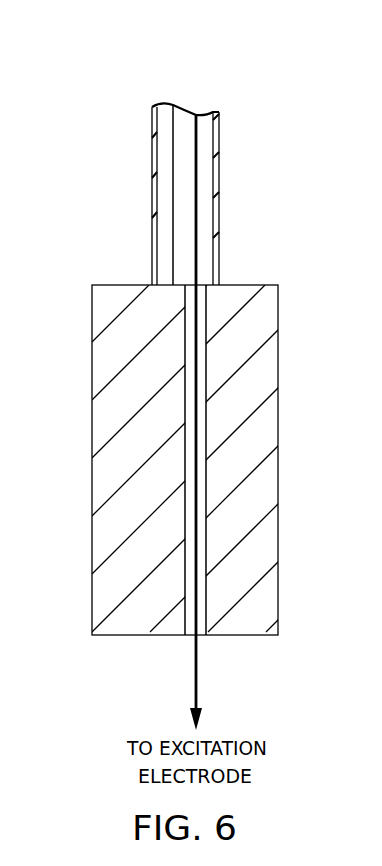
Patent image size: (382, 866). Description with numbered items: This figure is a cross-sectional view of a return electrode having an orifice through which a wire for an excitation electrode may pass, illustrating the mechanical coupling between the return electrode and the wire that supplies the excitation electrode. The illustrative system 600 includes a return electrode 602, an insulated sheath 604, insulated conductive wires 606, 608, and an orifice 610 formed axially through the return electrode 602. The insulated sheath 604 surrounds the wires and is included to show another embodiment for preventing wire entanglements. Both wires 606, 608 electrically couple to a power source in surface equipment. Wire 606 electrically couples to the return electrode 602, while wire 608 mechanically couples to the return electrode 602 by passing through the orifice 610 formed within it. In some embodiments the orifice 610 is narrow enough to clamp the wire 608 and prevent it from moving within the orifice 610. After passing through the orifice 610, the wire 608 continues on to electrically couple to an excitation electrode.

The system 600 is at (69, 58).
The return electrode 602 is at (92, 482).
The insulated sheath 604 is at (153, 192).
The insulated, conductive wire 606 is at (172, 238).
The insulated, conductive wire 608 is at (198, 252).
The orifice 610 is at (203, 605).